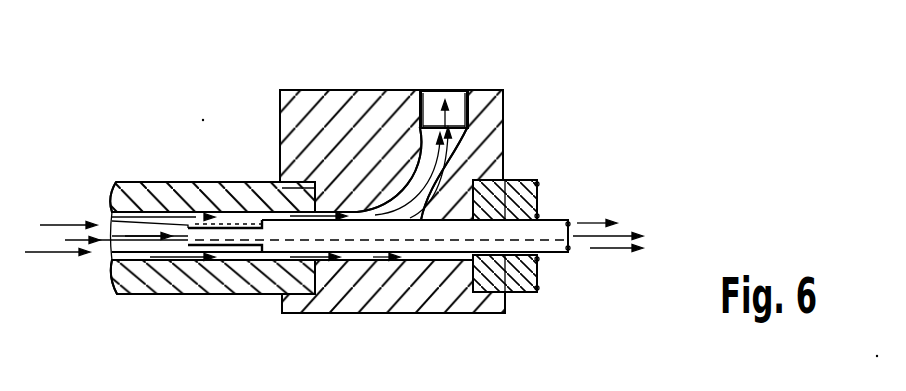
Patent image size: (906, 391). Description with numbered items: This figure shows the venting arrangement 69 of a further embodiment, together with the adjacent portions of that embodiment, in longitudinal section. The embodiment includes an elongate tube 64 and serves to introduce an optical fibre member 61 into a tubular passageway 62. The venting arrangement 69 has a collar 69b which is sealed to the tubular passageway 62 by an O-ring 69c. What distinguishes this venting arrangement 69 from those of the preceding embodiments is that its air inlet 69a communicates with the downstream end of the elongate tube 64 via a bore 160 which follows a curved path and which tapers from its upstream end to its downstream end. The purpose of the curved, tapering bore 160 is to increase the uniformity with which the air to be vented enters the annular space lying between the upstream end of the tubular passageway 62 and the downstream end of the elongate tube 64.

The venting arrangement 69 is at (391, 88).
The air inlet 69a is at (468, 88).
The collar 69b is at (523, 180).
The O-ring 69c is at (520, 293).
The elongate tube 64 is at (161, 205).
The tubular passageway 62 is at (568, 220).
The optical fibre member 61 is at (570, 252).
The bore 160 is at (386, 196).